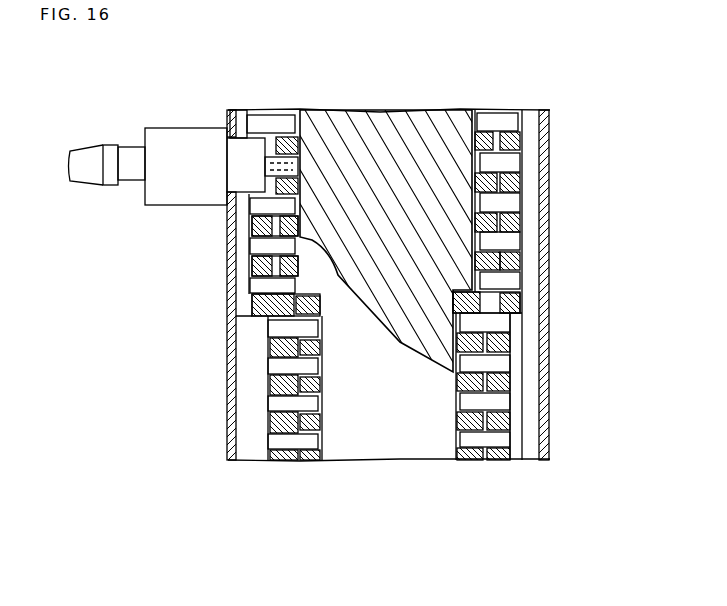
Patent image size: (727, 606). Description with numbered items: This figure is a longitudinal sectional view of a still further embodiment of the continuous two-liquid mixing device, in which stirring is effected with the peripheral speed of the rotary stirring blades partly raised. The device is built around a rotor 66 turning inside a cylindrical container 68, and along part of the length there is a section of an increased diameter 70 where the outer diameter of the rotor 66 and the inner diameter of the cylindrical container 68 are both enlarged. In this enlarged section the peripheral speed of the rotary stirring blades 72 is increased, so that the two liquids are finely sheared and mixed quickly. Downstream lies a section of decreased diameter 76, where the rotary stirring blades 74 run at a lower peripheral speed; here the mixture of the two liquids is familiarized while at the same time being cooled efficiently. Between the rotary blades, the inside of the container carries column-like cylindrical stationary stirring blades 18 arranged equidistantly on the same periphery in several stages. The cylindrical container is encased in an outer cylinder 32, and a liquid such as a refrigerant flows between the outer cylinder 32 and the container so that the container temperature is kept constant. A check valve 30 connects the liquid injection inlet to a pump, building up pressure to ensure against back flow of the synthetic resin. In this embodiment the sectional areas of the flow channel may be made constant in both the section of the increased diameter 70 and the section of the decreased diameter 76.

The stationary stirring blades 18 is at (493, 283).
The check valve 30 is at (176, 210).
The outer cylinder 32 is at (552, 435).
The rotor 66 is at (402, 130).
The cylindrical container 68 is at (549, 220).
The section of an increased diameter 70 is at (342, 135).
The rotary stirring blades 72 is at (530, 173).
The rotary stirring blades 74 is at (487, 384).
The section of decreased diameter 76 is at (393, 435).